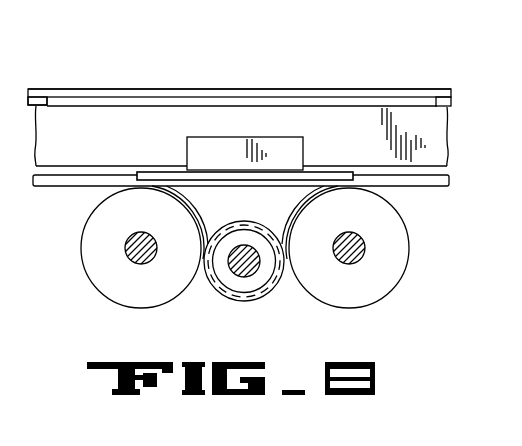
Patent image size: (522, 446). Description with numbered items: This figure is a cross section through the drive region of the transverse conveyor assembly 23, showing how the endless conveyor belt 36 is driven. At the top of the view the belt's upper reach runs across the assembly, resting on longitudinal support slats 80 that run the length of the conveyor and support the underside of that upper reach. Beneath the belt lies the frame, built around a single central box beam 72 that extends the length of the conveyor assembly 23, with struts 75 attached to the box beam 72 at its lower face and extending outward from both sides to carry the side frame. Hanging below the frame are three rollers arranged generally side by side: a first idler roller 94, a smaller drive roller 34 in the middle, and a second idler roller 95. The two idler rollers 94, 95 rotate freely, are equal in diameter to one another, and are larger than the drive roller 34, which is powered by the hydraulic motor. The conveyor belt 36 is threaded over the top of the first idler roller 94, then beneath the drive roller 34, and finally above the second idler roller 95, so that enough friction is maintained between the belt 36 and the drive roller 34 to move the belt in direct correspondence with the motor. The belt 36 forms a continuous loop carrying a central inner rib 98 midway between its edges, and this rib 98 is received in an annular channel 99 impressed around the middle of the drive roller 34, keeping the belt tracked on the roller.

The transverse conveyor assembly 23 is at (234, 89).
The drive roller 34 is at (248, 288).
The endless conveyor belt 36 is at (331, 92).
The central box beam 72 is at (168, 150).
The struts 75 is at (316, 174).
The longitudinal support slats 80 is at (143, 97).
The first idler roller 94 is at (159, 299).
The second idler roller 95 is at (366, 299).
The central inner rib 98 is at (46, 103).
The annular channel 99 is at (234, 228).